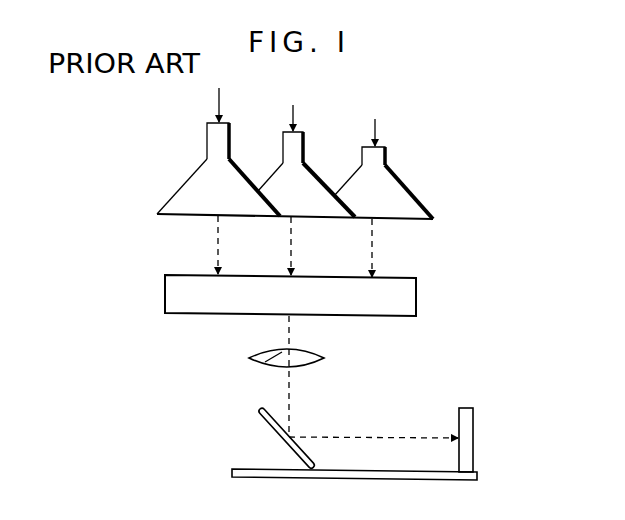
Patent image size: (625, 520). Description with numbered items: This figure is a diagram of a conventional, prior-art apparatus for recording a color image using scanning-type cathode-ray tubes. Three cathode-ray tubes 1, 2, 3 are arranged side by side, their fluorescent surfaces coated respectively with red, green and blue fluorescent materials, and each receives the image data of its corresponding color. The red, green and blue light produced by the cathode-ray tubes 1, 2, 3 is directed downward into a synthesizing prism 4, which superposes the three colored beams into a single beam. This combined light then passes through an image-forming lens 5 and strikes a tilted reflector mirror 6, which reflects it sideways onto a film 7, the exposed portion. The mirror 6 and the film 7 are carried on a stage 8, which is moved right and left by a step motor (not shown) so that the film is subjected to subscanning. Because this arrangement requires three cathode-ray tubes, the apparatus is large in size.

The cathode-ray tube 1 is at (197, 175).
The cathode-ray tube 2 is at (277, 177).
The cathode-ray tube 3 is at (357, 178).
The synthesizing prism 4 is at (416, 283).
The image-forming lens 5 is at (250, 356).
The tilted reflector mirror 6 is at (259, 412).
The film 7 is at (473, 420).
The stage 8 is at (477, 475).